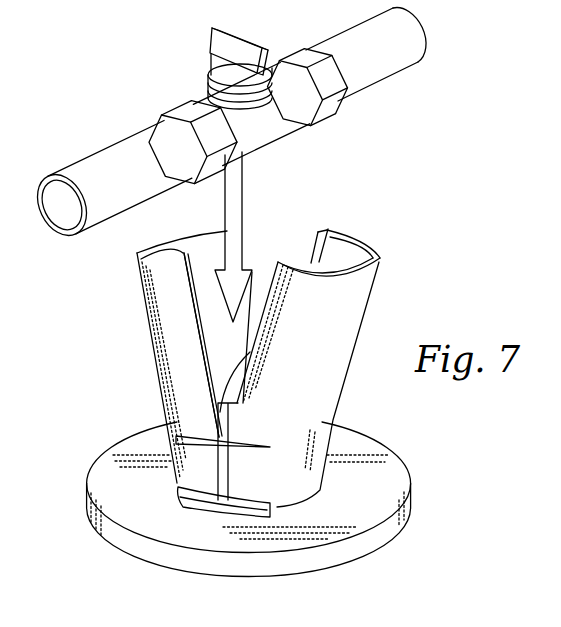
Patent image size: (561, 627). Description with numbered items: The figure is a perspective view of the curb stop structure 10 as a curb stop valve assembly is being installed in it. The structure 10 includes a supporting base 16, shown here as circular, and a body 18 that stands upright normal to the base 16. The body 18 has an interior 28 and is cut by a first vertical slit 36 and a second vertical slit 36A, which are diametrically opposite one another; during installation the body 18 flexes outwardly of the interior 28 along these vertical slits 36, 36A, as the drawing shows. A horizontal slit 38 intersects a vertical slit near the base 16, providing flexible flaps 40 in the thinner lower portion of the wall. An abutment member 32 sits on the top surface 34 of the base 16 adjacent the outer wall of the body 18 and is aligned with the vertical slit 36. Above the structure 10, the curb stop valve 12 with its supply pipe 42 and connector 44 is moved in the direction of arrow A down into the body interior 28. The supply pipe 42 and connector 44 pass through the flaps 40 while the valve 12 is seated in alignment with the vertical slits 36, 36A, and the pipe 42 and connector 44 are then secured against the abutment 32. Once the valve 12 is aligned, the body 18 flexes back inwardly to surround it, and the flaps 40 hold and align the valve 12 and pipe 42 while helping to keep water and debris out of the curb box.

The curb stop structure 10 is at (253, 374).
The curb stop valve 12 is at (210, 51).
The supporting base 16 is at (418, 508).
The body 18 is at (338, 335).
The interior 28 is at (220, 330).
The abutment member 32 is at (193, 513).
The top surface 34 is at (137, 497).
The vertical slit 36 is at (203, 377).
The second vertical slit 36A is at (318, 230).
The horizontal slit 38 is at (197, 443).
The flaps 40 is at (237, 432).
The supply pipe 42 is at (117, 163).
The connector 44 is at (178, 110).
The arrow A is at (233, 190).